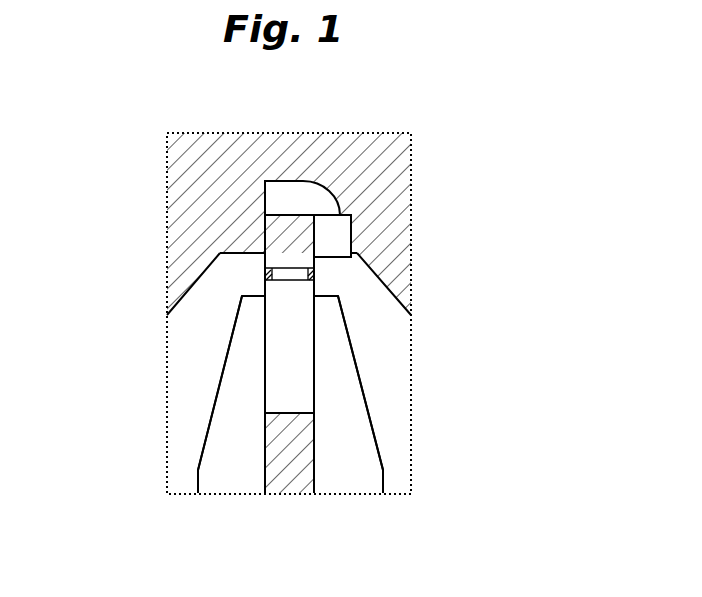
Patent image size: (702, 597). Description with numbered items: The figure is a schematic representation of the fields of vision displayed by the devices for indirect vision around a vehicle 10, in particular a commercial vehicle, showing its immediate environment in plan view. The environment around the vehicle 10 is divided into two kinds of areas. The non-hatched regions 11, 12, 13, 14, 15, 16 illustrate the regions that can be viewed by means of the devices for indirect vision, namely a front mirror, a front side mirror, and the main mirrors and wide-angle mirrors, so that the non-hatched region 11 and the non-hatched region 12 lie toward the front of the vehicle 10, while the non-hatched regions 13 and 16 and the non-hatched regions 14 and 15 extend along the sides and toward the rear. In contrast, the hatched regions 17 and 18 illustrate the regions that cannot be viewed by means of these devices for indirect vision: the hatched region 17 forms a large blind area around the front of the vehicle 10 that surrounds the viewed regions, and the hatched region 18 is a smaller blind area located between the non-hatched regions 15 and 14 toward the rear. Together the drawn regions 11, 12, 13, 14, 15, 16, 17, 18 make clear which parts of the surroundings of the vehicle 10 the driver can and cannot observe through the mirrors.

The vehicle 10 is at (308, 400).
The non-hatched region 11 is at (280, 205).
The non-hatched region 12 is at (345, 230).
The non-hatched region 13 is at (384, 359).
The non-hatched region 14 is at (348, 462).
The non-hatched region 15 is at (232, 460).
The non-hatched region 16 is at (195, 376).
The hatched region 17 is at (403, 193).
The hatched region 18 is at (295, 453).